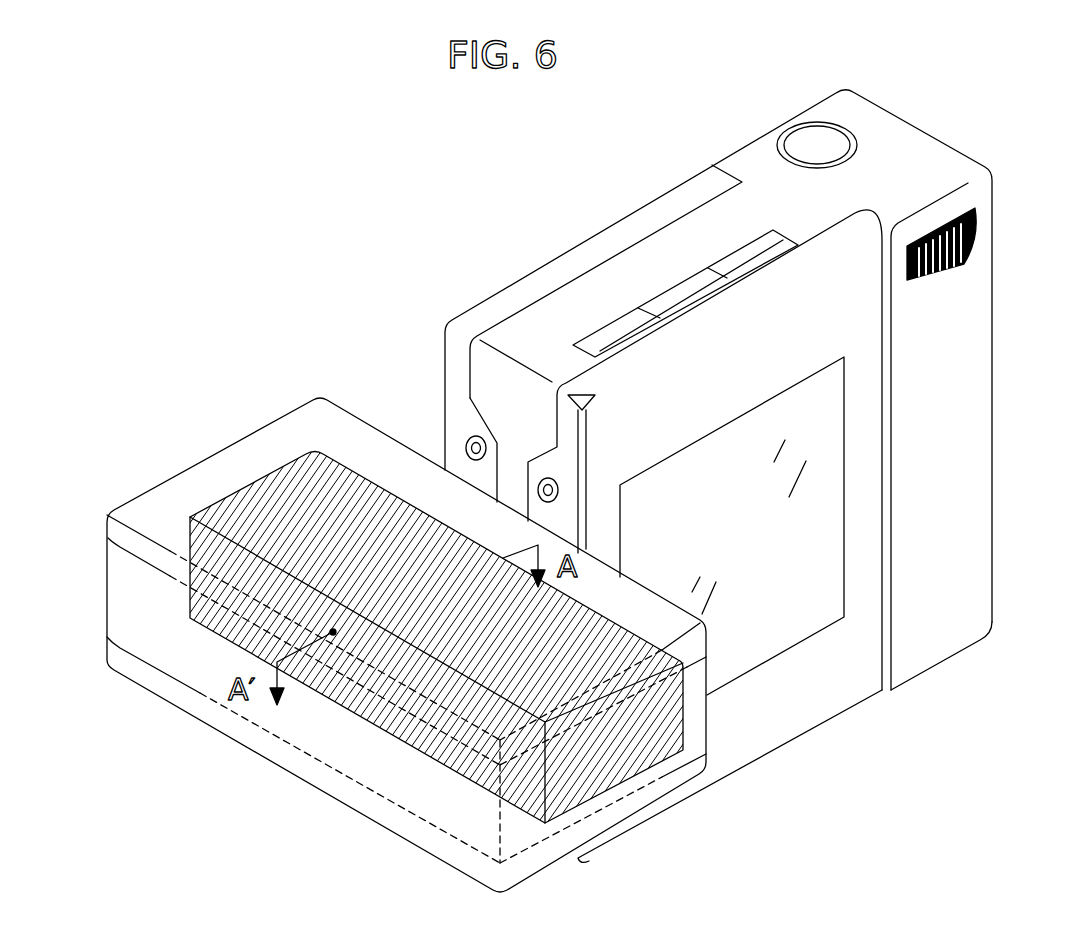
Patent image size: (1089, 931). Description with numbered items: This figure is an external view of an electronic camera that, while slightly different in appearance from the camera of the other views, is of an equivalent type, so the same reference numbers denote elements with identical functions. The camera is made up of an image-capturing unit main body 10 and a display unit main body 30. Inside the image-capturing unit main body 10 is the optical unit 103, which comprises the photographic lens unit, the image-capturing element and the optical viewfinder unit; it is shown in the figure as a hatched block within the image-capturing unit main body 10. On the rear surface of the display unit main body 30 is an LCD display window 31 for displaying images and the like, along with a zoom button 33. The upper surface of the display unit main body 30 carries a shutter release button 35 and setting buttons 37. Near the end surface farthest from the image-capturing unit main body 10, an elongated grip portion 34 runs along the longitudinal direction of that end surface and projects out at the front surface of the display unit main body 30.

The image-capturing unit main body 10 is at (250, 432).
The optical unit 103 is at (317, 518).
The display unit main body 30 is at (620, 273).
The LCD display window 31 is at (808, 612).
The zoom button 33 is at (968, 256).
The elongated grip portion 34 is at (733, 150).
The shutter release button 35 is at (812, 148).
The setting buttons 37 is at (618, 327).